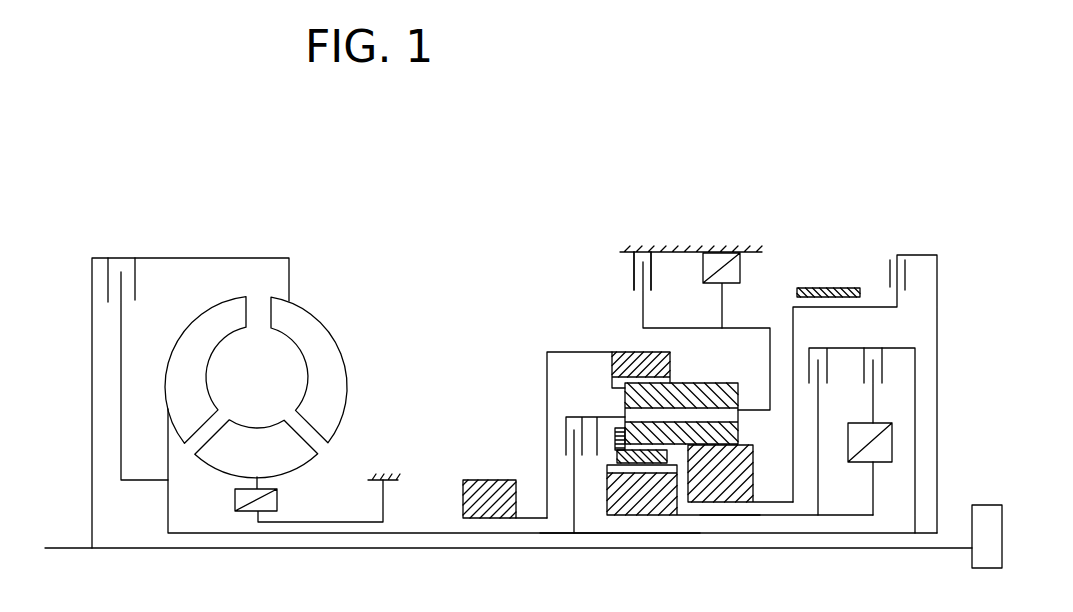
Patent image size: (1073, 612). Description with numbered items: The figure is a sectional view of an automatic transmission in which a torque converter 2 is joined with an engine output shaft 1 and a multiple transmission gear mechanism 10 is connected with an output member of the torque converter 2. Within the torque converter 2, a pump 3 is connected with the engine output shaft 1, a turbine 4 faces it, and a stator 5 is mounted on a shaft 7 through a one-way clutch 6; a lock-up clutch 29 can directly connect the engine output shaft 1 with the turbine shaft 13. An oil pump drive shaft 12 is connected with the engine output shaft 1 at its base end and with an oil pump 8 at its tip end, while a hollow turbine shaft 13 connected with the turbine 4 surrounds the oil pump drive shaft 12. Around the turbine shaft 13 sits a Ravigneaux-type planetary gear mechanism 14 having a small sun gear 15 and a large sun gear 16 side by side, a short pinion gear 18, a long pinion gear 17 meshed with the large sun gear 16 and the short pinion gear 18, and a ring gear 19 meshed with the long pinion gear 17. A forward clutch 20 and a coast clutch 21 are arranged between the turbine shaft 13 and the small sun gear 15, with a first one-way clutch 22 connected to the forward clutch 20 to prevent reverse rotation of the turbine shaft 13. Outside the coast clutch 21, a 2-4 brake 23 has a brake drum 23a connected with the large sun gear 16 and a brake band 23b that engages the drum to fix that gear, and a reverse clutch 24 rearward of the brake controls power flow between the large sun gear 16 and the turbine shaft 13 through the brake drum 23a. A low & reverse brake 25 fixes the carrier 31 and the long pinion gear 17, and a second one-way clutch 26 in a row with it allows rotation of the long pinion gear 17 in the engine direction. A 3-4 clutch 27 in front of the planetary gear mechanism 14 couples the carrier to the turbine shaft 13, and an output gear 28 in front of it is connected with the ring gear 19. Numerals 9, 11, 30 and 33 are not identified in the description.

The engine output shaft 1 is at (52, 550).
The torque converter 2 is at (275, 378).
The pump 3 is at (316, 318).
The turbine 4 is at (196, 314).
The stator 5 is at (303, 466).
The one-way clutch 6 is at (235, 500).
The shaft 7 is at (323, 534).
The oil pump 8 is at (1002, 555).
The housing 9 is at (92, 384).
The multiple transmission gear mechanism 10 is at (818, 203).
The ground 11 is at (390, 480).
The oil pump drive shaft 12 is at (546, 549).
The turbine shaft 13 is at (721, 516).
The Ravigneaux-type planetary gear mechanism 14 is at (543, 391).
The small sun gear 15 is at (653, 516).
The large sun gear 16 is at (746, 503).
The long pinion gear 17 is at (740, 430).
The short pinion gear 18 is at (613, 446).
The ring gear 19 is at (632, 351).
The forward clutch 20 is at (885, 366).
The coast clutch 21 is at (830, 366).
The first one-way clutch 22 is at (855, 463).
The 2-4 brake 23 is at (888, 186).
The brake drum 23a is at (840, 299).
The brake band 23b is at (816, 288).
The reverse clutch 24 is at (903, 253).
The low & reverse brake 25 is at (633, 277).
The second one-way clutch 26 is at (742, 270).
The 3-4 clutch 27 is at (566, 440).
The output gear 28 is at (463, 505).
The lock-up clutch 29 is at (135, 300).
The holder 30 is at (542, 340).
The carrier 31 is at (606, 416).
The ground 33 is at (682, 250).